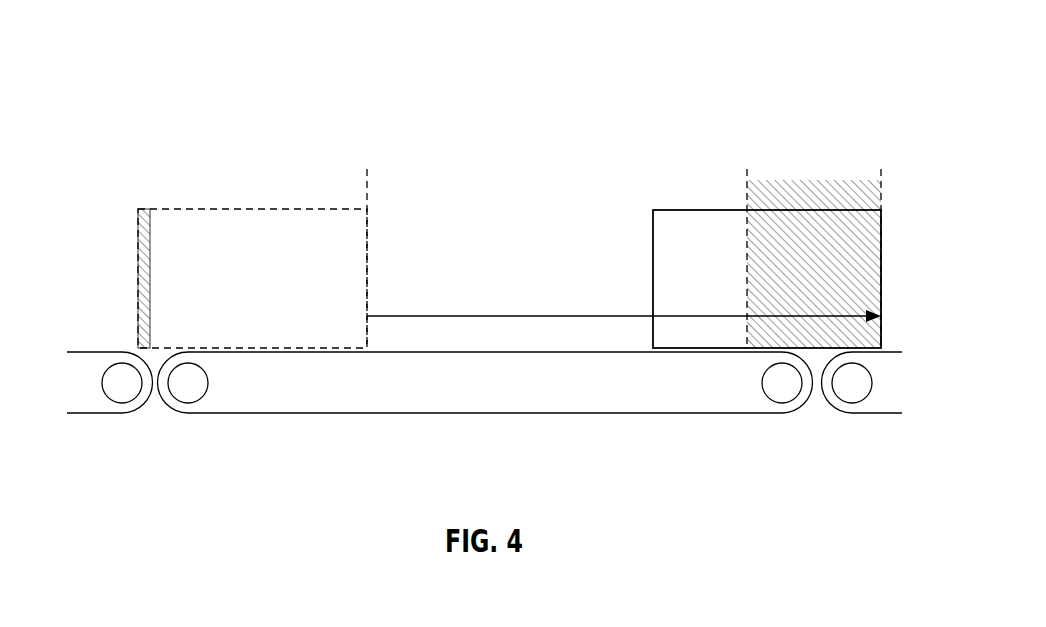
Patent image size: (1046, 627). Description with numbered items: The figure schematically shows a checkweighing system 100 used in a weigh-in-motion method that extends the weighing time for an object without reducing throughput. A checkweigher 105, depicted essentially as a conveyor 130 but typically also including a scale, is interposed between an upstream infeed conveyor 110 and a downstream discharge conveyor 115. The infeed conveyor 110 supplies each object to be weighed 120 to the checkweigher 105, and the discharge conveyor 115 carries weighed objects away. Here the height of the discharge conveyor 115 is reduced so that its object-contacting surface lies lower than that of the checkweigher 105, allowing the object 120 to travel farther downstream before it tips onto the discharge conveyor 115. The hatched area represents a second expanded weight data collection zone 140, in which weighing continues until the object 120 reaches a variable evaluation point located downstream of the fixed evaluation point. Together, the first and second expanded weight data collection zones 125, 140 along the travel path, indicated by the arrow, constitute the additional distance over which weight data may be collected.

The checkweighing system 100 is at (244, 84).
The checkweigher 105 is at (300, 432).
The infeed conveyor 110 is at (115, 413).
The discharge conveyor 115 is at (878, 413).
The object to be weighed 120 is at (160, 250).
The first expanded weight data collection zone 125 is at (145, 305).
The conveyor 130 is at (720, 413).
The second expanded weight data collection zone 140 is at (870, 270).